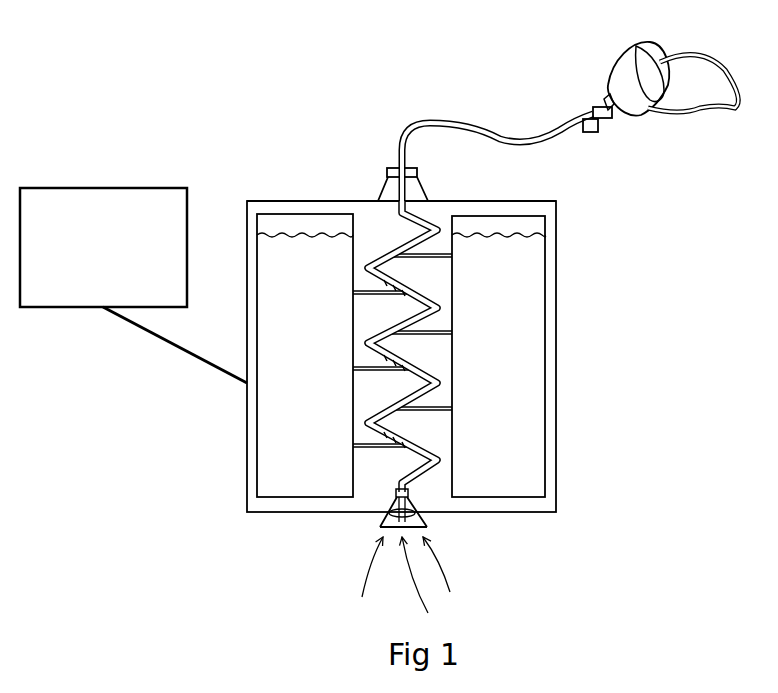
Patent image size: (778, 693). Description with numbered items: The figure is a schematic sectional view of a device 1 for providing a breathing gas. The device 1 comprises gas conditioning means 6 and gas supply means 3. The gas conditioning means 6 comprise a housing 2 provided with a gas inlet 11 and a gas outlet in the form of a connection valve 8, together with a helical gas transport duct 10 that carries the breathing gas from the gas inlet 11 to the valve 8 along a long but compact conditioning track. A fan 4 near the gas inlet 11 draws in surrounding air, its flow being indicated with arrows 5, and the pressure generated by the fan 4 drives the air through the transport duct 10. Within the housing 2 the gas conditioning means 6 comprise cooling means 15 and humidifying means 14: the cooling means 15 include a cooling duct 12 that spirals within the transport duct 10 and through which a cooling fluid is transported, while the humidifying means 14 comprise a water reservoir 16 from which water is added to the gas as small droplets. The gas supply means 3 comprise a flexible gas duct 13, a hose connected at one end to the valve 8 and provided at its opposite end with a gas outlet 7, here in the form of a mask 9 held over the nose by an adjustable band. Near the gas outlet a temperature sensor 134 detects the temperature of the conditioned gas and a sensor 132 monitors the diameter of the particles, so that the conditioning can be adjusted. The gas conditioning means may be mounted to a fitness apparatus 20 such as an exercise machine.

The device 1 is at (235, 151).
The housing 2 is at (558, 228).
The gas supply means 3 is at (413, 121).
The fan 4 is at (427, 520).
The arrows 5 is at (438, 570).
The gas conditioning means 6 is at (314, 197).
The gas outlet 7 is at (633, 62).
The connection valve 8 is at (413, 188).
The mask 9 is at (709, 62).
The gas transport duct 10 is at (435, 222).
The gas inlet 11 is at (380, 520).
The cooling duct 12 is at (420, 448).
The gas duct 13 is at (497, 138).
The humidifying means 14 is at (523, 290).
The cooling means 15 is at (287, 408).
The water reservoir 16 is at (523, 337).
The fitness apparatus 20 is at (133, 285).
The sensor 132 is at (606, 121).
The temperature sensor 134 is at (592, 133).